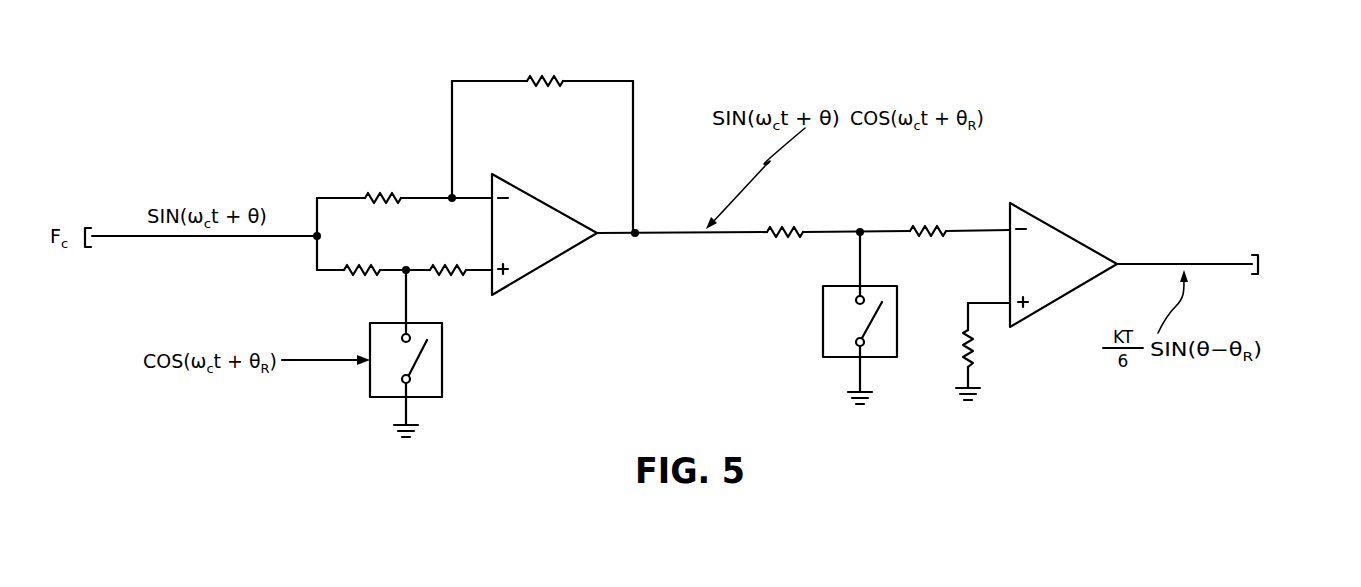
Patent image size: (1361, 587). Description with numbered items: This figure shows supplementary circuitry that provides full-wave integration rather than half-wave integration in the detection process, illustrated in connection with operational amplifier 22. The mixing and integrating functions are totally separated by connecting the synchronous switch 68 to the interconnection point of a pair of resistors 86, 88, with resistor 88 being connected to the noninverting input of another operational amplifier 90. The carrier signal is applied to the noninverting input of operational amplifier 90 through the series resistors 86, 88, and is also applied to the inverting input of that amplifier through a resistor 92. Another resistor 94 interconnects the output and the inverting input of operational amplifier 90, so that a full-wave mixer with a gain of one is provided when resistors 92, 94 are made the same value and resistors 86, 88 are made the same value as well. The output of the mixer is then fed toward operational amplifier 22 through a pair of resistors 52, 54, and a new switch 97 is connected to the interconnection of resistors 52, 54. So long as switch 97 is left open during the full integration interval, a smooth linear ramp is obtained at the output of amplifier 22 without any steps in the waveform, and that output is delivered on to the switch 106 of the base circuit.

The operational amplifier 22 is at (1064, 228).
The resistor 52 is at (783, 225).
The resistor 54 is at (927, 225).
The synchronous switch 68 is at (442, 350).
The resistor 86 is at (355, 266).
The resistor 88 is at (439, 266).
The operational amplifier 90 is at (541, 197).
The resistor 92 is at (377, 191).
The resistor 94 is at (541, 76).
The switch 97 is at (823, 325).
The switch 106 is at (1224, 281).